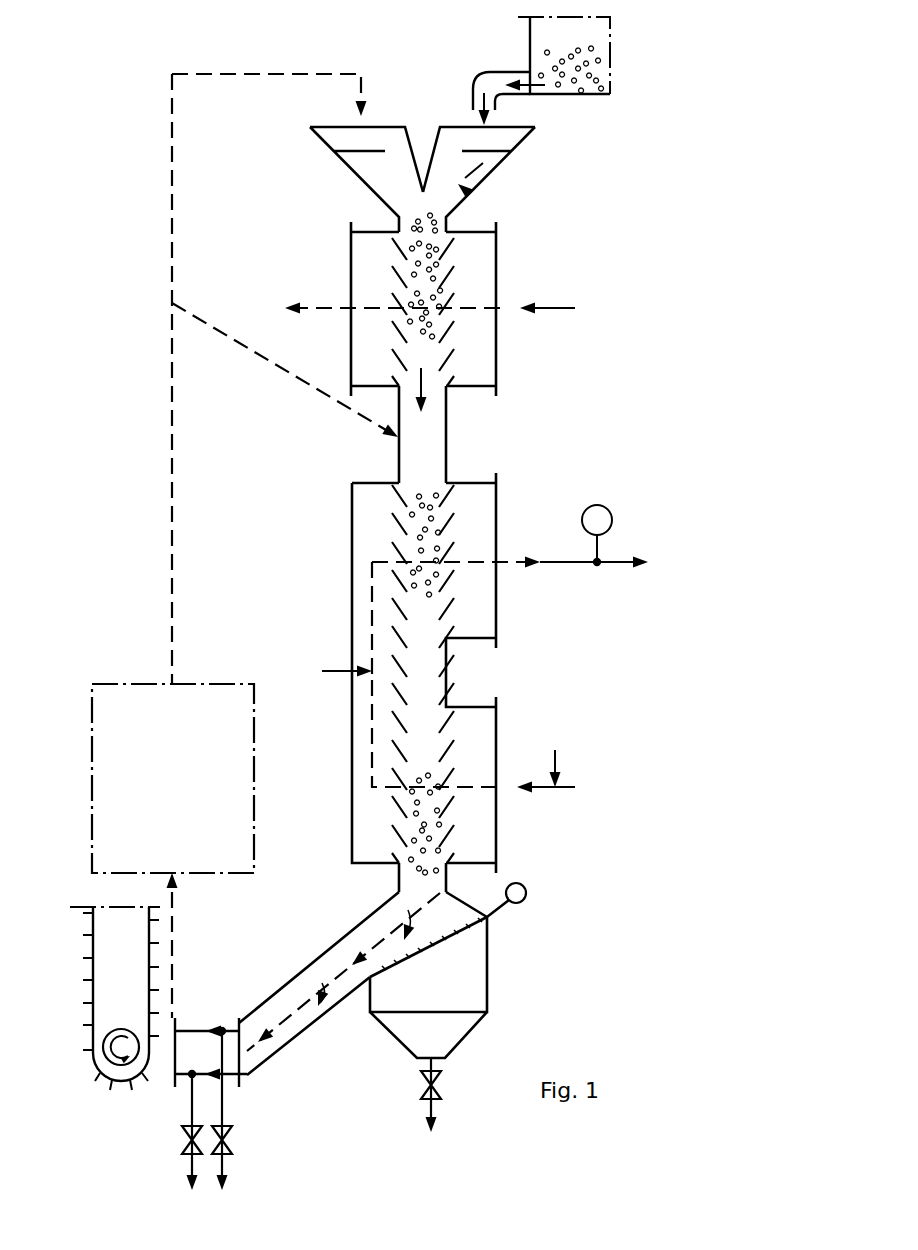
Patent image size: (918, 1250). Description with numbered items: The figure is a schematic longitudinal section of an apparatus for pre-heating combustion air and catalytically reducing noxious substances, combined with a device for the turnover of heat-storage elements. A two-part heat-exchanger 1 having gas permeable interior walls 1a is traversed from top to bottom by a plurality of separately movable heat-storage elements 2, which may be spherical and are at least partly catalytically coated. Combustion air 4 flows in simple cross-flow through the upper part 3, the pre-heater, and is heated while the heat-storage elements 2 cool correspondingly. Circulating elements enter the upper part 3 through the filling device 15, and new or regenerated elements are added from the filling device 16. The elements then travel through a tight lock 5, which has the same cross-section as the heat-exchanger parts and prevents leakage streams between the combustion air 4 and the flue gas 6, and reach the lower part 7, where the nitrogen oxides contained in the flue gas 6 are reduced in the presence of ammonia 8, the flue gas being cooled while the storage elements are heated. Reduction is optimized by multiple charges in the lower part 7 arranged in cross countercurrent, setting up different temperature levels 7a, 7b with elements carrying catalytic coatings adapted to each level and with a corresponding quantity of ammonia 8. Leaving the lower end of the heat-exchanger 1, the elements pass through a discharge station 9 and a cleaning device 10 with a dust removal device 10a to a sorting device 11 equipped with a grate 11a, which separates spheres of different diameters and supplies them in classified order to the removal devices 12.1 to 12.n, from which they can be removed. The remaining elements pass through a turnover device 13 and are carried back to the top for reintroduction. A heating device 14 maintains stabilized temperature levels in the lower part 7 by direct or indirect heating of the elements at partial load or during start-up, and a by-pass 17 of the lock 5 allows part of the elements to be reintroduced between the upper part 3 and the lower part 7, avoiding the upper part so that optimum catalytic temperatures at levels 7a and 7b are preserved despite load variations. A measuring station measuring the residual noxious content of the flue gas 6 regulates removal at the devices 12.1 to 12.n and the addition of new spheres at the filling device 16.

The heat-exchanger 1 is at (430, 470).
The gas permeable interior walls 1a is at (446, 336).
The heat-storage elements 2 is at (562, 93).
The upper part of heat-exchanger 3 is at (430, 360).
The combustion air 4 is at (556, 306).
The lock 5 is at (447, 432).
The flue gas 6 is at (571, 566).
The lower part of heat-exchanger 7 is at (436, 691).
The temperature level 7a is at (435, 735).
The temperature level 7b is at (430, 612).
The ammonia 8 is at (335, 672).
The discharge station 9 is at (450, 880).
The cleaning device 10 is at (441, 1001).
The dust removal device 10a is at (433, 1107).
The sorting device 11 is at (340, 992).
The grate 11a is at (305, 1000).
The removal device 12.1 is at (183, 1163).
The removal device 12.n is at (235, 1163).
The turnover device 13 is at (121, 1078).
The heating device 14 is at (186, 805).
The filling device 15 is at (362, 180).
The filling device 16 is at (493, 172).
The by-pass 17 is at (263, 357).